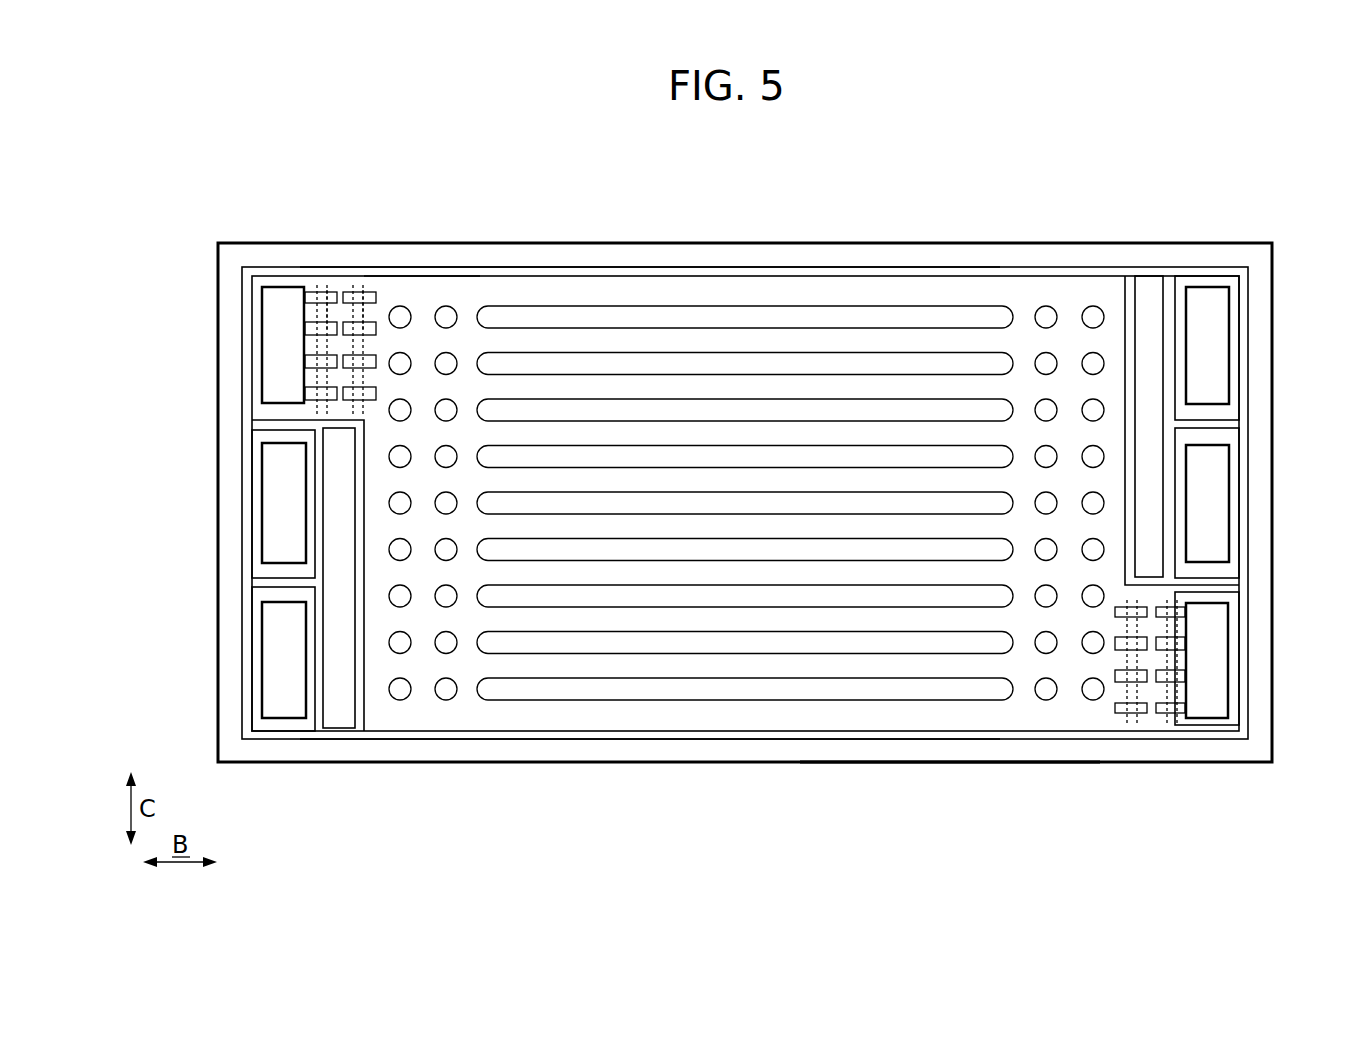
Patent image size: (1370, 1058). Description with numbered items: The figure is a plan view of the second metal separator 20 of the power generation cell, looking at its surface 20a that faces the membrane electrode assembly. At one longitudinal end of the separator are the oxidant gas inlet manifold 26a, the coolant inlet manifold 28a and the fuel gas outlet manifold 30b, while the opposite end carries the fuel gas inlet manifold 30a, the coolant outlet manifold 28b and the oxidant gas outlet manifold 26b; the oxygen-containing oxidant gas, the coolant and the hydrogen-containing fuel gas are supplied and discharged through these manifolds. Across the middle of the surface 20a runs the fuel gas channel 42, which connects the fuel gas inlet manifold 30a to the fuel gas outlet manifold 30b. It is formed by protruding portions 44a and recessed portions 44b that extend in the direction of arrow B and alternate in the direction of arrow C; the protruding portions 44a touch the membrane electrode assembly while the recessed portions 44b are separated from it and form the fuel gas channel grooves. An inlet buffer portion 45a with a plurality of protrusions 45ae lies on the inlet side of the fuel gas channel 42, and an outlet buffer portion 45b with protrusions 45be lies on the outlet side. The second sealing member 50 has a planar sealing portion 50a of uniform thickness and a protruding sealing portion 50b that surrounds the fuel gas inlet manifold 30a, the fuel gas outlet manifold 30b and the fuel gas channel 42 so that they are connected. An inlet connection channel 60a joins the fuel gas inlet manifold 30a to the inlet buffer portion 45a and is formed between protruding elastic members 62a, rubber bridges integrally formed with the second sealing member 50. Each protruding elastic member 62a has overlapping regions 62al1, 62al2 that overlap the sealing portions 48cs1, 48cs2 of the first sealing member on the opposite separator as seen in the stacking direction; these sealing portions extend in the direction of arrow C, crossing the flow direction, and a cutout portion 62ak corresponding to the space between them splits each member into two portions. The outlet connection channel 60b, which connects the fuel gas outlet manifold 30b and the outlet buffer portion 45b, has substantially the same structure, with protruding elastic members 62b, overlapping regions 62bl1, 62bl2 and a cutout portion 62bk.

The second metal separator 20 is at (832, 122).
The surface of the second metal separator 20a is at (978, 747).
The oxidant gas inlet manifold 26a is at (1203, 313).
The oxidant gas outlet manifold 26b is at (275, 627).
The coolant inlet manifold 28a is at (1222, 478).
The coolant outlet manifold 28b is at (263, 483).
The fuel gas inlet manifold 30a is at (270, 322).
The fuel gas outlet manifold 30b is at (1215, 692).
The fuel gas channel 42 is at (695, 385).
The protruding portions 44a is at (573, 400).
The recessed portions 44b is at (952, 387).
The inlet buffer portion 45a is at (418, 653).
The protrusions 45ae is at (400, 690).
The outlet buffer portion 45b is at (1068, 345).
The protrusions 45be is at (1094, 310).
The sealing portion 48cs1 is at (405, 312).
The sealing portion 48cs2 is at (325, 320).
The second sealing member 50 is at (799, 240).
The planar sealing portion 50a is at (865, 258).
The protruding sealing portion 50b is at (865, 736).
The inlet connection channel 60a is at (380, 287).
The outlet connection channel 60b is at (1114, 712).
The protruding elastic members 62a is at (310, 293).
The cutout portion 62ak is at (342, 398).
The overlapping region 62al1 is at (360, 293).
The overlapping region 62al2 is at (323, 293).
The protruding elastic members 62b is at (1120, 712).
The cutout portion 62bk is at (1153, 645).
The overlapping region 62bl1 is at (1131, 612).
The overlapping region 62bl2 is at (1170, 610).